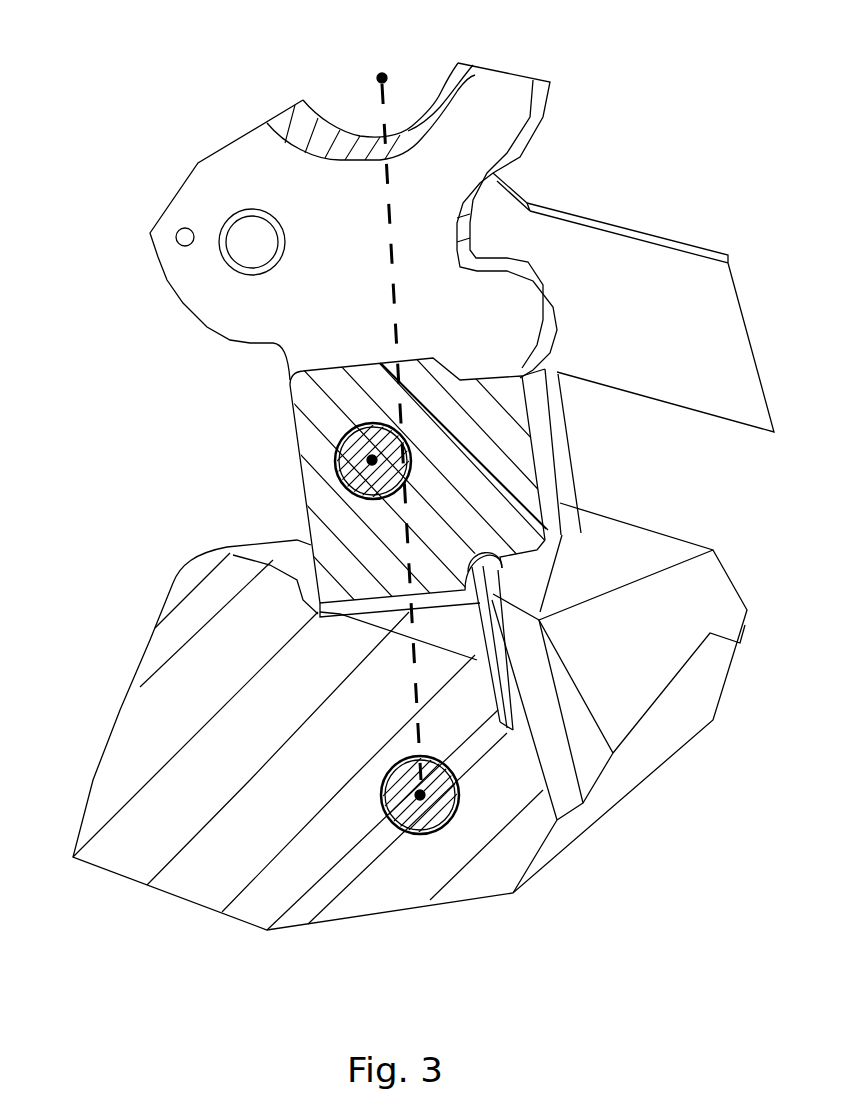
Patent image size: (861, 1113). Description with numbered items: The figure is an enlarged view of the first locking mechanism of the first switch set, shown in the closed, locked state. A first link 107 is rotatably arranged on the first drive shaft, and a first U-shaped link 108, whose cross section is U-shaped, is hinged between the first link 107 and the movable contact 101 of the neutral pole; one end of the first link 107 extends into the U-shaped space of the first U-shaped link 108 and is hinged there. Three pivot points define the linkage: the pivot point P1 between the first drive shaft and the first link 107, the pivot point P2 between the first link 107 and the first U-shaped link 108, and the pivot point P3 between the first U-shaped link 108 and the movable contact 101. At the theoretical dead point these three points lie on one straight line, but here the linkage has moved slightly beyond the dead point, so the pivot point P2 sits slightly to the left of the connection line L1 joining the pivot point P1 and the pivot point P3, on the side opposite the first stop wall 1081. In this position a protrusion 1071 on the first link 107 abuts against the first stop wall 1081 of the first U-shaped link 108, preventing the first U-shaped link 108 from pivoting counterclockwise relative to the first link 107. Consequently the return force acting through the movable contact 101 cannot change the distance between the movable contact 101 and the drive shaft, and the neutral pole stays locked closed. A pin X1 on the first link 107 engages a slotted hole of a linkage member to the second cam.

The first link 107 is at (508, 93).
The protrusion 1071 is at (518, 330).
The first U-shaped link 108 is at (333, 512).
The first stop wall 1081 is at (548, 450).
The movable contact 101 is at (222, 710).
The pin X1 is at (247, 233).
The pivot point P1 is at (382, 78).
The pivot point P2 is at (372, 460).
The pivot point P3 is at (420, 797).
The connection line L1 is at (418, 432).